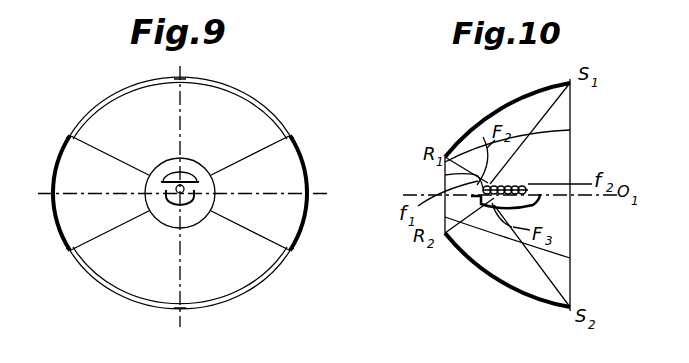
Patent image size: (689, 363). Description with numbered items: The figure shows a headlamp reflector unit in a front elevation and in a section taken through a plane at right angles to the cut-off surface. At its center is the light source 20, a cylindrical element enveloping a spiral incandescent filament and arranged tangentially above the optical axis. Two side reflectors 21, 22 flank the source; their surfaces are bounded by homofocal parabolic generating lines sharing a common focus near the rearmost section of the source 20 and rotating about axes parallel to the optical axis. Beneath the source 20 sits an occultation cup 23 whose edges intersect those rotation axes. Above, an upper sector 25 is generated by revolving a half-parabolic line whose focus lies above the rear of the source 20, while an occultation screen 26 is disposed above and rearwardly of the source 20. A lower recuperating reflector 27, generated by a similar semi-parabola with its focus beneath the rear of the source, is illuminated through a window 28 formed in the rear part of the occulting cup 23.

In FIG. 10, the light source 20 is at (517, 180).
In FIG. 9, the side reflector 21 is at (62, 170).
In FIG. 9, the side reflector 22 is at (297, 179).
In FIG. 10, the side reflector 22 is at (561, 161).
In FIG. 9, the occultation cup 23 is at (177, 204).
In FIG. 10, the occultation cup 23 is at (540, 207).
In FIG. 9, the upper sector 25 is at (250, 126).
In FIG. 10, the upper sector 25 is at (477, 128).
In FIG. 9, the occultation screen 26 is at (186, 171).
In FIG. 10, the occultation screen 26 is at (445, 177).
In FIG. 10, the lower recuperating reflector 27 is at (513, 278).
In FIG. 10, the window 28 is at (457, 245).